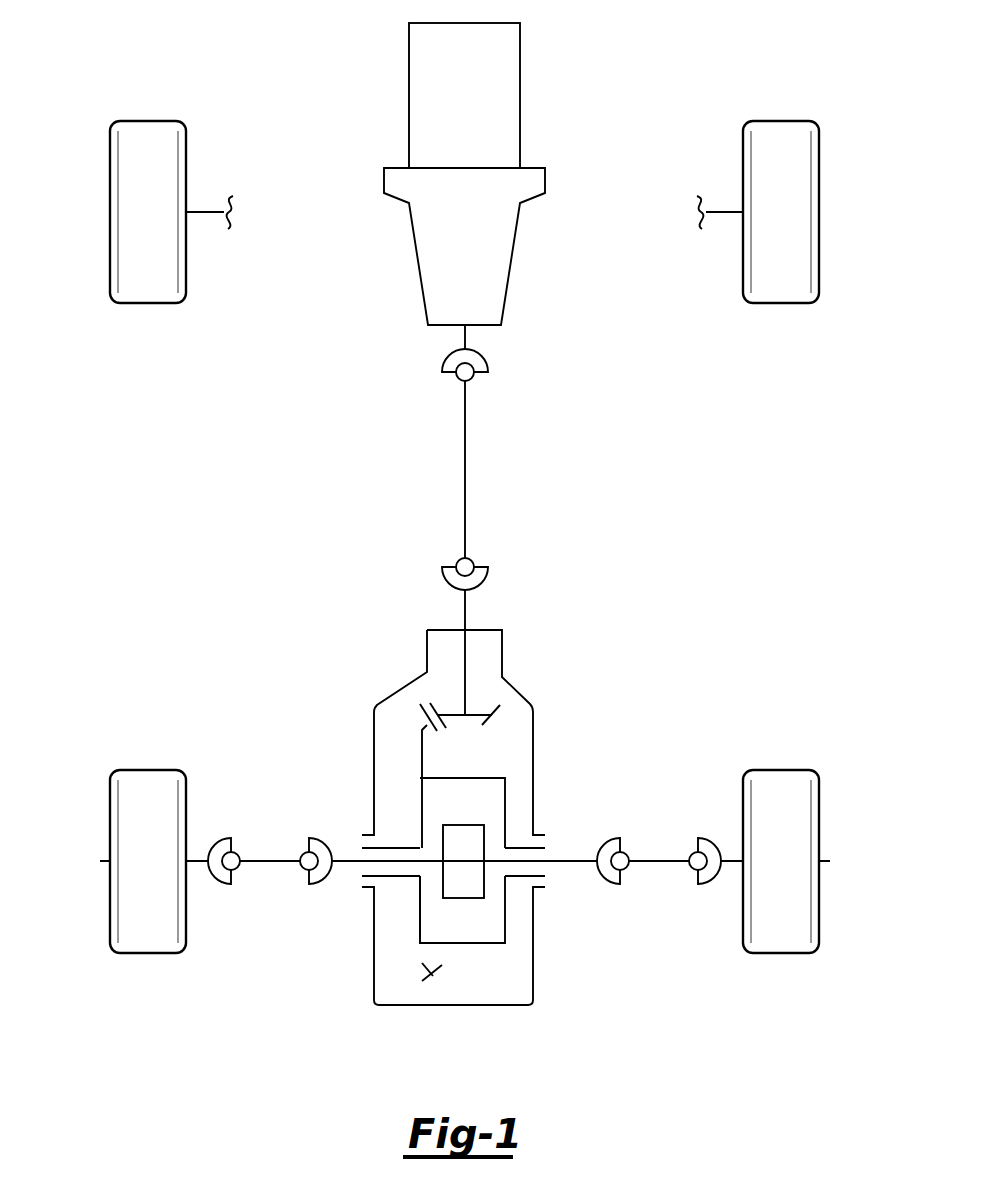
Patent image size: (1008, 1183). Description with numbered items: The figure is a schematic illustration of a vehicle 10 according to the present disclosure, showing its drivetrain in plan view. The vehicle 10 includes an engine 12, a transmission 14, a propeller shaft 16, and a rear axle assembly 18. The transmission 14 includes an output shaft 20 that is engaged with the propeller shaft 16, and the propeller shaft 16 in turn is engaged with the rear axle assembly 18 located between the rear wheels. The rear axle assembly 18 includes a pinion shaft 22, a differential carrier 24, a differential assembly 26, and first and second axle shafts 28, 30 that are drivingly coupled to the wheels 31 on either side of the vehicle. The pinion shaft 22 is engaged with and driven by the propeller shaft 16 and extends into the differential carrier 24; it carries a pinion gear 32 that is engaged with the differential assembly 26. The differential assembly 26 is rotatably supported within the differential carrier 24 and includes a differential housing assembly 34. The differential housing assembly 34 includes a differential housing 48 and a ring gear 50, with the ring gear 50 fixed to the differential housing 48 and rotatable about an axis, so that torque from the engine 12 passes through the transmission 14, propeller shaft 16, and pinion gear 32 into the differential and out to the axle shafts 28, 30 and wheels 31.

The vehicle 10 is at (652, 122).
The engine 12 is at (409, 97).
The transmission 14 is at (510, 298).
The propeller shaft 16 is at (466, 447).
The rear axle assembly 18 is at (381, 664).
The output shaft 20 is at (468, 336).
The pinion shaft 22 is at (465, 672).
The differential carrier 24 is at (492, 628).
The differential assembly 26 is at (410, 757).
The first axle shaft 28 is at (272, 884).
The second axle shaft 30 is at (658, 884).
The wheels 31 is at (100, 861).
The pinion gear 32 is at (496, 713).
The differential housing assembly 34 is at (404, 906).
The differential housing 48 is at (487, 944).
The ring gear 50 is at (433, 976).